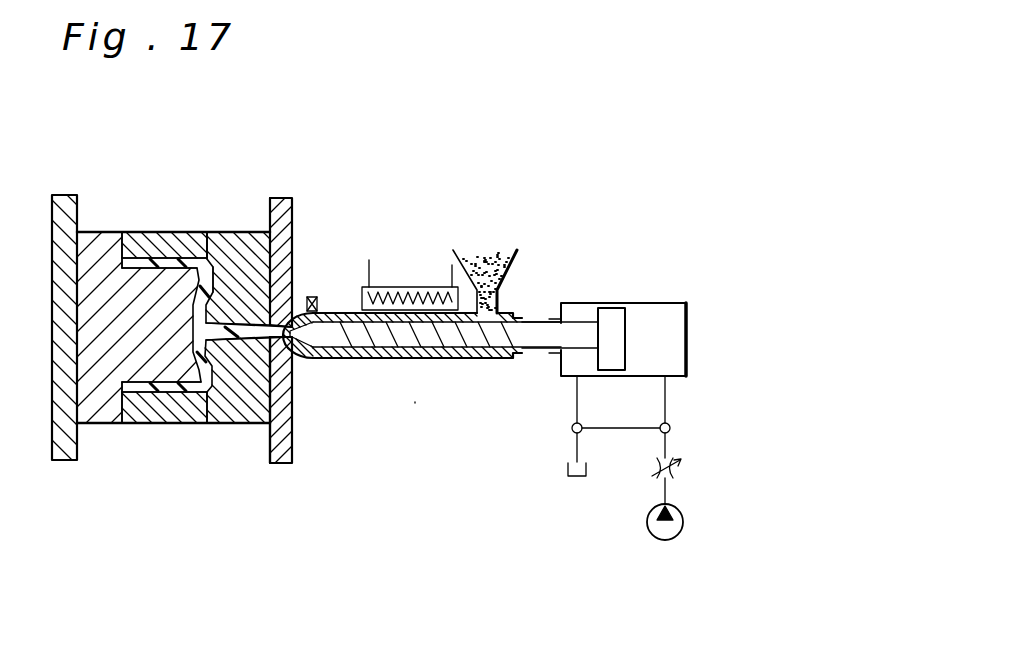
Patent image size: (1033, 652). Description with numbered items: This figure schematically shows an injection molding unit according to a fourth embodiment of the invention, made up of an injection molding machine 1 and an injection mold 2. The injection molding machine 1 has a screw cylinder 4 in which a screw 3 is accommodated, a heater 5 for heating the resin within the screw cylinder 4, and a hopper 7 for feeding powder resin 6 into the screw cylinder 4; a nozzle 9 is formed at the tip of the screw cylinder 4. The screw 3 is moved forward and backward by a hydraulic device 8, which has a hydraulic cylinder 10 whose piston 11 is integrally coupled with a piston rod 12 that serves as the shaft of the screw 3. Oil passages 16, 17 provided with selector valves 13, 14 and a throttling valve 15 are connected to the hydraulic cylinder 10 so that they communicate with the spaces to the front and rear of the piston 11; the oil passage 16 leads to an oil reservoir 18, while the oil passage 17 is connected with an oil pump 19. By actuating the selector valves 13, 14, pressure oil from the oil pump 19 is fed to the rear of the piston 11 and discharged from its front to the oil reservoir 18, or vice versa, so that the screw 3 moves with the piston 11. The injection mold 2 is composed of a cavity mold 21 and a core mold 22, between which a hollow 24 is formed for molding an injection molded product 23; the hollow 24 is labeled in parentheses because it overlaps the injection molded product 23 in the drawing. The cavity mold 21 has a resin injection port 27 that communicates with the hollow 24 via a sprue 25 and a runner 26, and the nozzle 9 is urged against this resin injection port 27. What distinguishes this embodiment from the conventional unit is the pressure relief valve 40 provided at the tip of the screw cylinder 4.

The injection molding machine 1 is at (415, 402).
The injection mold 2 is at (163, 438).
The screw 3 is at (363, 352).
The screw cylinder 4 is at (492, 342).
The heater 5 is at (392, 287).
The powder resin 6 is at (480, 252).
The hopper 7 is at (510, 266).
The hydraulic device 8 is at (620, 465).
The nozzle 9 is at (328, 312).
The hydraulic cylinder 10 is at (583, 303).
The piston 11 is at (615, 317).
The piston rod 12 is at (537, 340).
The selector valve 13 is at (572, 432).
The selector valve 14 is at (671, 428).
The throttling valve 15 is at (680, 470).
The oil passage 16 is at (577, 395).
The oil passage 17 is at (665, 392).
The oil reservoir 18 is at (567, 478).
The oil pump 19 is at (683, 517).
The cavity mold 21 is at (235, 418).
The core mold 22 is at (93, 413).
The injection molded product 23 is at (178, 258).
The hollow 24 is at (178, 258).
The sprue 25 is at (238, 275).
The runner 26 is at (216, 290).
The resin injection port 27 is at (293, 352).
The pressure relief valve 40 is at (309, 294).